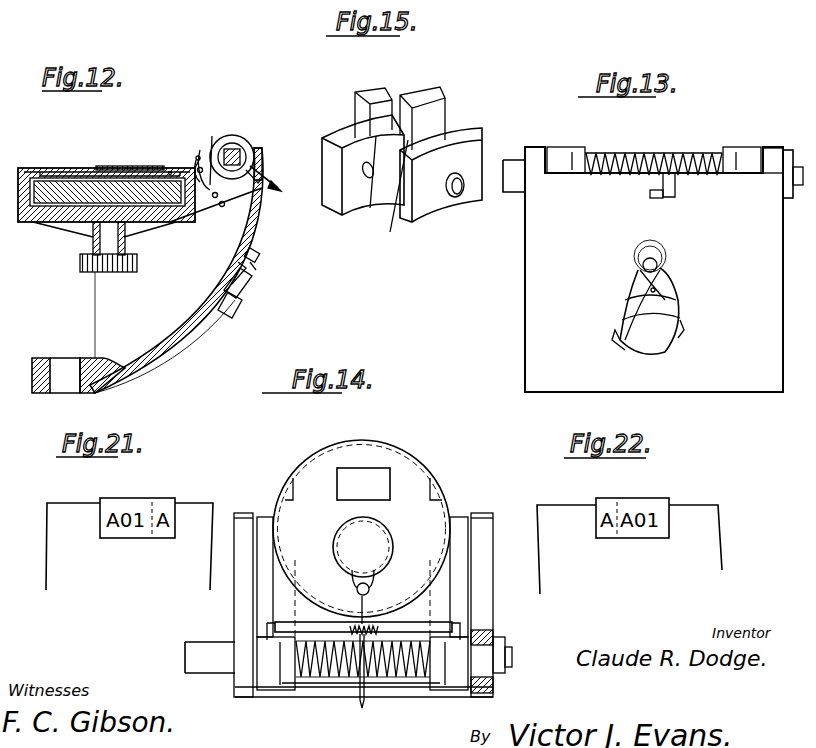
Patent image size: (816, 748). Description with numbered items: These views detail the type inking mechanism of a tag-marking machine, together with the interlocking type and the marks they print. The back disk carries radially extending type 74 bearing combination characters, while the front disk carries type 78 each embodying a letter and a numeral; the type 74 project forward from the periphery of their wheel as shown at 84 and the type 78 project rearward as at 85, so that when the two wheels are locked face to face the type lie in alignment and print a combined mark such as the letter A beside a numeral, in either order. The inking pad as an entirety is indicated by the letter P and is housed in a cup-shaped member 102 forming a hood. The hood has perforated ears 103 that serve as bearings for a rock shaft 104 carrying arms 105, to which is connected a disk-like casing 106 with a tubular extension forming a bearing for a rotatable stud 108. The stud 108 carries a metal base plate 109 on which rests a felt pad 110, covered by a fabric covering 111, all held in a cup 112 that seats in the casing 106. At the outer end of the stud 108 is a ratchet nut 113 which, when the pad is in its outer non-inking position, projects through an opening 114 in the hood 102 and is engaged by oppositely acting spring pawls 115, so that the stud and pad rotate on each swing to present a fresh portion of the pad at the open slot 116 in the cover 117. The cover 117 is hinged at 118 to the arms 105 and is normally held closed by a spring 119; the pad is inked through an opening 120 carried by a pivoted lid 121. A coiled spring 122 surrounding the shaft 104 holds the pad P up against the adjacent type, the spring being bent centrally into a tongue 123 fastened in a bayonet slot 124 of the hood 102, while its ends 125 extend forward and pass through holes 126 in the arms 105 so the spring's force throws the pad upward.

In FIG. 15, the type 74 is at (332, 135).
In FIG. 15, the type 78 is at (460, 128).
In FIG. 15, the forward projection of type 84 is at (366, 179).
In FIG. 15, the rearward projection of type 85 is at (392, 193).
In FIG. 12, the cup-shaped member 102 is at (262, 235).
In FIG. 13, the cup-shaped member 102 is at (537, 146).
In FIG. 14, the cup-shaped member 102 is at (494, 612).
In FIG. 12, the perforated ears 103 is at (256, 162).
In FIG. 13, the perforated ears 103 is at (775, 150).
In FIG. 12, the rock shaft 104 is at (262, 172).
In FIG. 13, the rock shaft 104 is at (796, 178).
In FIG. 14, the rock shaft 104 is at (330, 680).
In FIG. 12, the arms 105 is at (212, 210).
In FIG. 13, the arms 105 is at (590, 148).
In FIG. 14, the arms 105 is at (263, 516).
In FIG. 12, the casing 106 is at (168, 226).
In FIG. 14, the casing 106 is at (432, 480).
In FIG. 12, the rotatable stud 108 is at (112, 244).
In FIG. 12, the base plate 109 is at (48, 220).
In FIG. 12, the pad 110 is at (66, 176).
In FIG. 12, the covering 111 is at (37, 172).
In FIG. 12, the cup 112 is at (172, 170).
In FIG. 12, the ratchet nut 113 is at (121, 273).
In FIG. 12, the opening 114 is at (184, 342).
In FIG. 12, the spring pawls 115 is at (236, 300).
In FIG. 13, the spring pawls 115 is at (648, 297).
In FIG. 14, the open slot 116 is at (363, 484).
In FIG. 14, the cover 117 is at (360, 452).
In FIG. 14, the hinge 118 is at (270, 623).
In FIG. 14, the spring 119 is at (376, 604).
In FIG. 14, the opening 120 is at (380, 552).
In FIG. 14, the pivoted lid 121 is at (336, 543).
In FIG. 12, the coiled spring 122 is at (236, 158).
In FIG. 13, the coiled spring 122 is at (660, 156).
In FIG. 14, the coiled spring 122 is at (412, 680).
In FIG. 12, the tongue 123 is at (282, 190).
In FIG. 13, the tongue 123 is at (650, 196).
In FIG. 14, the tongue 123 is at (362, 712).
In FIG. 13, the bayonet slot 124 is at (676, 200).
In FIG. 12, the spring ends 125 is at (212, 150).
In FIG. 14, the spring ends 125 is at (362, 663).
In FIG. 12, the holes 126 is at (224, 206).
In FIG. 12, the inking pad P is at (88, 173).
In FIG. 14, the inking pad P is at (404, 462).